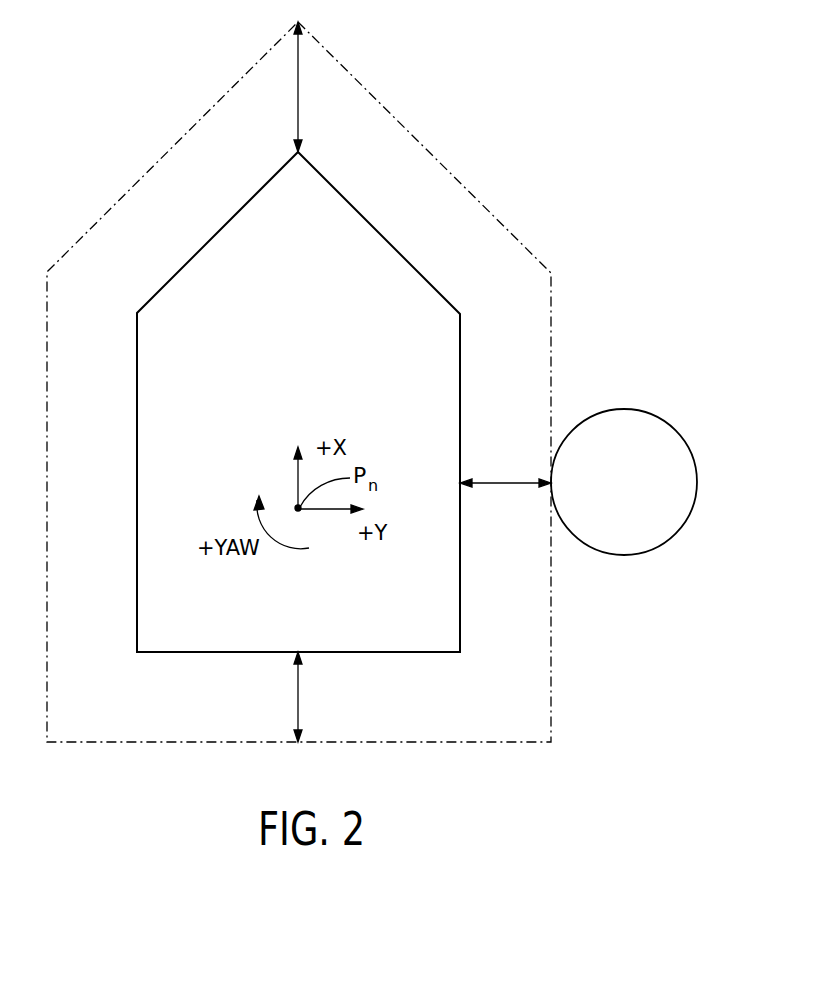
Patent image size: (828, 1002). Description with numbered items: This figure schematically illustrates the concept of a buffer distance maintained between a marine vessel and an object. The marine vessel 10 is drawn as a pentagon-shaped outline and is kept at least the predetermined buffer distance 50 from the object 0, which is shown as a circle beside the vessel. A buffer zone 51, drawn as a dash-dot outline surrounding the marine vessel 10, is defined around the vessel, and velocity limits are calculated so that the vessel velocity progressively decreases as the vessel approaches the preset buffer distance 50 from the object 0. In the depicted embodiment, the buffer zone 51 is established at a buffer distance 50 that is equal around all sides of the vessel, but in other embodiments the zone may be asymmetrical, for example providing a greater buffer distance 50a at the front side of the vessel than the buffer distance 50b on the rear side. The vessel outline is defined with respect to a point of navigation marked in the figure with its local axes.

The object 0 is at (622, 408).
The marine vessel 10 is at (378, 232).
The buffer distance 50 is at (521, 480).
The front buffer distance 50a is at (298, 87).
The rear buffer distance 50b is at (301, 714).
The buffer zone 51 is at (424, 146).